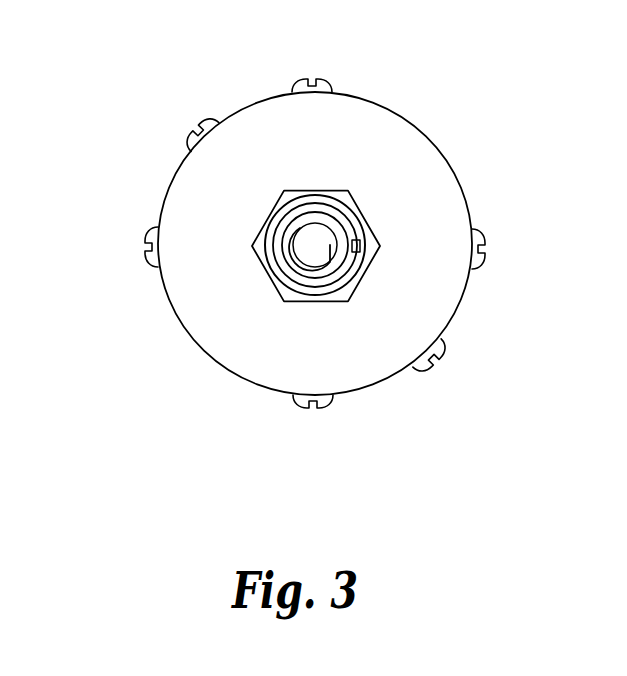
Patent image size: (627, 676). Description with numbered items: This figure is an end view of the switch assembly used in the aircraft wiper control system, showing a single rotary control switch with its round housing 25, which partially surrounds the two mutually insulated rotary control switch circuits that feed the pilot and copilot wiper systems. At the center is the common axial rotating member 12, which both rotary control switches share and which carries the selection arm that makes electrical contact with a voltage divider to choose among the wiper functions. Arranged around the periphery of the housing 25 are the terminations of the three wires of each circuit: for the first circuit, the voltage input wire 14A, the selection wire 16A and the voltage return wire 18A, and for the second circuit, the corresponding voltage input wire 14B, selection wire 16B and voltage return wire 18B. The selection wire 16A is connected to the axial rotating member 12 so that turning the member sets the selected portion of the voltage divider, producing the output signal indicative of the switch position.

The axial rotating member 12 is at (325, 233).
The voltage input wire 14A is at (330, 410).
The voltage input wire 14B is at (150, 230).
The selection wire 16A is at (448, 359).
The selection wire 16B is at (207, 125).
The voltage return wire 18A is at (490, 233).
The voltage return wire 18B is at (305, 79).
The housing 25 is at (198, 345).